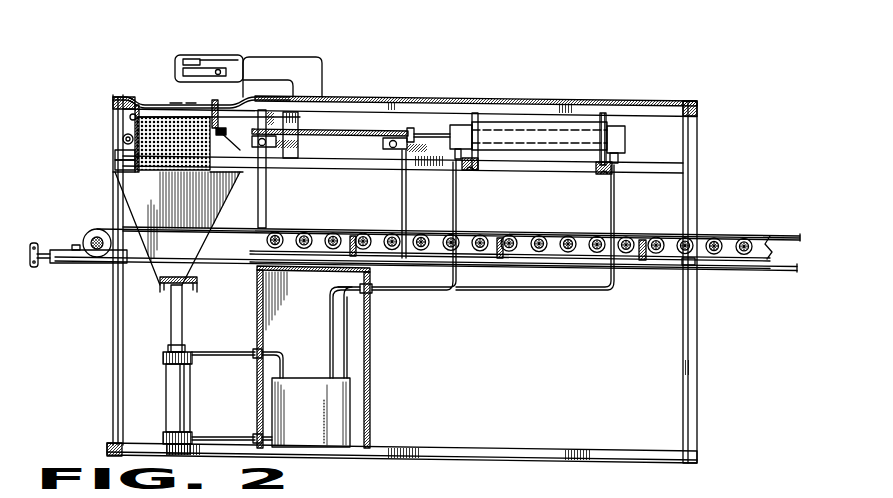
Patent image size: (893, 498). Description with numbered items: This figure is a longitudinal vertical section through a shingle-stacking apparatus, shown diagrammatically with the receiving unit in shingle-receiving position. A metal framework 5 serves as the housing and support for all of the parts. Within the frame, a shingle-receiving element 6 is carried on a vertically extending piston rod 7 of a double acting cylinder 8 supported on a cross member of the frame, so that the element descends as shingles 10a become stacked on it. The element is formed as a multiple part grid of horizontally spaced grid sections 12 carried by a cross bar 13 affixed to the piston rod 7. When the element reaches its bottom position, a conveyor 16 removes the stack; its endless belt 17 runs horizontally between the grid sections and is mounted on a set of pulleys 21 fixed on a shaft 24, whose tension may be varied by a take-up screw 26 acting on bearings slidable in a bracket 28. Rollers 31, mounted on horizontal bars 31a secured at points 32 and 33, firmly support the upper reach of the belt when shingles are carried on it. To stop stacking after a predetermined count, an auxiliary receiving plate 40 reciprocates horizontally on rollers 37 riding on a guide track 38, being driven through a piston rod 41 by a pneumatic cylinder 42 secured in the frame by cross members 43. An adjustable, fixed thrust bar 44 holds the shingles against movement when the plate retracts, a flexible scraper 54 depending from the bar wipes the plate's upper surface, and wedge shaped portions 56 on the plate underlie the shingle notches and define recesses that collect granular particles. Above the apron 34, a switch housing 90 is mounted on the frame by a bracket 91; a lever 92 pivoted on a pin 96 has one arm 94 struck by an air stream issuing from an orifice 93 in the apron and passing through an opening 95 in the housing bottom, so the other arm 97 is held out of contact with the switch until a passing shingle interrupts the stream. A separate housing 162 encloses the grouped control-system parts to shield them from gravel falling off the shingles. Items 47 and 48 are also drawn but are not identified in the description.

The metal framework 5 is at (370, 108).
The shingle-receiving element 6 is at (181, 369).
The piston rod 7 is at (170, 320).
The double acting cylinder 8 is at (173, 398).
The shingles 10a is at (160, 172).
The grid sections 12 is at (187, 187).
The cross bar 13 is at (199, 283).
The conveyor 16 is at (461, 233).
The endless belt 17 is at (426, 255).
The set of pulleys 21 is at (84, 235).
The shaft 24 is at (96, 254).
The take-up screw 26 is at (33, 243).
The bracket 28 is at (66, 259).
The rollers 31 is at (527, 228).
The horizontal bars 31a is at (526, 260).
The securing point 32 is at (273, 225).
The securing point 33 is at (682, 227).
The apron 34 is at (143, 104).
The rollers 37 is at (268, 148).
The guide track 38 is at (456, 160).
The auxiliary receiving plate 40 is at (515, 161).
The piston rod 41 is at (433, 137).
The pneumatic cylinder 42 is at (626, 138).
The cross members 43 is at (470, 171).
The thrust bar 44 is at (220, 107).
The roller 47 is at (129, 117).
The roller 48 is at (123, 140).
The flexible scraper 54 is at (240, 150).
The wedge shaped portions 56 is at (339, 154).
The housing 90 is at (243, 48).
The bracket 91 is at (316, 73).
The lever 92 is at (250, 80).
The air orifice 93 is at (175, 102).
The lever arm 94 is at (190, 57).
The opening 95 is at (190, 103).
The pin 96 is at (220, 69).
The lever arm 97 is at (252, 63).
The housing 162 is at (344, 390).